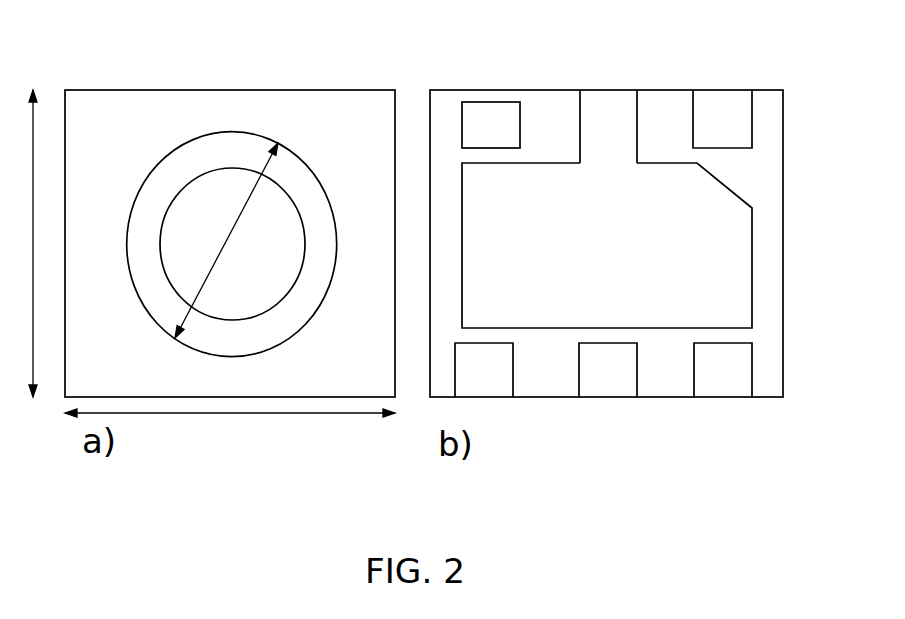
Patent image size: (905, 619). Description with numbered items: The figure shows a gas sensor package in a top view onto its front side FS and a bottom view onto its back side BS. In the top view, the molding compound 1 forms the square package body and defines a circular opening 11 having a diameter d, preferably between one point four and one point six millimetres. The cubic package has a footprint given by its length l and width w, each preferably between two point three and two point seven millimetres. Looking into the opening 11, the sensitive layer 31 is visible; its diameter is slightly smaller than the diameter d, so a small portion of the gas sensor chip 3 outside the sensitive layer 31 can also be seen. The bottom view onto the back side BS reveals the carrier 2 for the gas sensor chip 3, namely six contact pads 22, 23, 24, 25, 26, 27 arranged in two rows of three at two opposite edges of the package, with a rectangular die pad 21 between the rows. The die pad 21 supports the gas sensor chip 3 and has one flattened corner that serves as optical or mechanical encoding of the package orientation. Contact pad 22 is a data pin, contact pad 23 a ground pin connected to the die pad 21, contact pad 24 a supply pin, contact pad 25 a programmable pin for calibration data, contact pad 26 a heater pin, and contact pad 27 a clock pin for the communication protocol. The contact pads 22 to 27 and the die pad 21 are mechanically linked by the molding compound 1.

The molding compound 1 is at (152, 118).
The front side FS is at (313, 118).
The back side BS is at (765, 370).
The gas sensor chip 3 is at (195, 330).
The opening 11 is at (230, 357).
The sensitive layer 31 is at (260, 293).
The diameter d is at (226, 240).
The width w is at (22, 243).
The length l is at (230, 433).
The carrier 2 is at (557, 86).
The die pad 21 is at (607, 245).
The contact pad 22 is at (491, 125).
The contact pad 23 is at (608, 126).
The contact pad 24 is at (722, 119).
The contact pad 25 is at (484, 370).
The contact pad 26 is at (608, 370).
The contact pad 27 is at (723, 370).